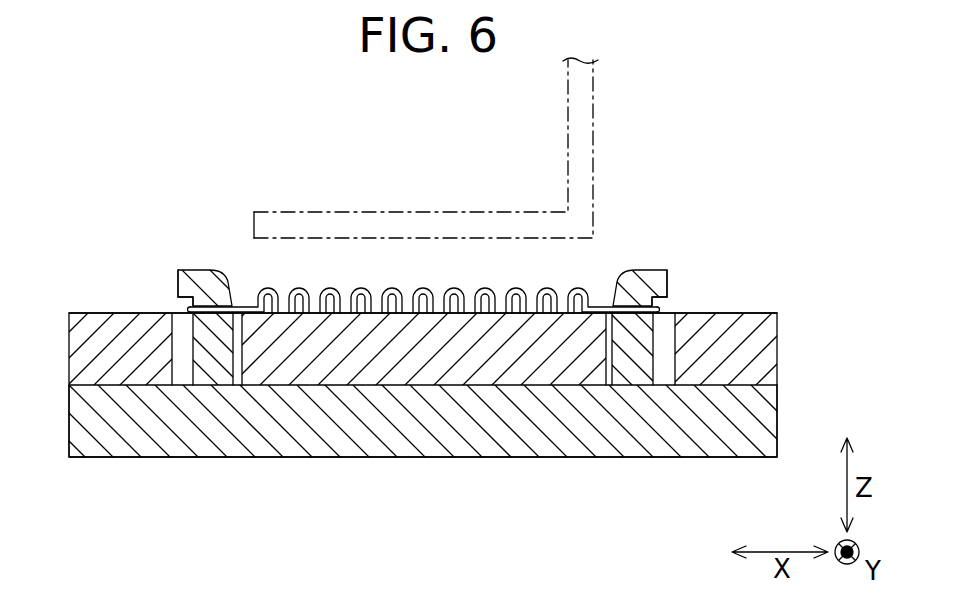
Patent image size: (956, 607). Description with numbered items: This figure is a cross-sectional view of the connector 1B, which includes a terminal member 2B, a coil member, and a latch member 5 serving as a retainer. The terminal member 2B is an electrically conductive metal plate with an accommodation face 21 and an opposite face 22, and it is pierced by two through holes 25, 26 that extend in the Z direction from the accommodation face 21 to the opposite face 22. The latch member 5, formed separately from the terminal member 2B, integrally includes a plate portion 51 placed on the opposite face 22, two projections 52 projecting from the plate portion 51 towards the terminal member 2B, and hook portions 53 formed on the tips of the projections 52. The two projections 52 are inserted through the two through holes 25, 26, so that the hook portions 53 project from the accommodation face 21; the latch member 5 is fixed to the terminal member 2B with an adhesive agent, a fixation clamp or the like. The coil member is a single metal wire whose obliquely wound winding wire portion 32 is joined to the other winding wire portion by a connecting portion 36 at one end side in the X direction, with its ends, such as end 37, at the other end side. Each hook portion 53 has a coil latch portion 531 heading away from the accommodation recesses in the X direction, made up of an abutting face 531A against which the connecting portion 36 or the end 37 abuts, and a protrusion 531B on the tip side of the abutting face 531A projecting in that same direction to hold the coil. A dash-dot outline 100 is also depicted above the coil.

The connector 1B is at (728, 145).
The terminal member 2B is at (767, 330).
The latch member 5 is at (433, 423).
The accommodation face 21 is at (90, 313).
The face on an opposite side 22 is at (103, 387).
The through hole 25 is at (175, 357).
The through hole 26 is at (671, 357).
The winding wire portion 32 is at (552, 284).
The connecting portion 36 is at (185, 310).
The end 37 is at (660, 312).
The plate portion 51 is at (768, 400).
The projection 52 is at (220, 343).
The hook portion 53 is at (200, 275).
The coil latch portion 531 is at (181, 296).
The abutting face 531A is at (182, 303).
The protrusion 531B is at (178, 275).
The external probe 100 is at (595, 75).